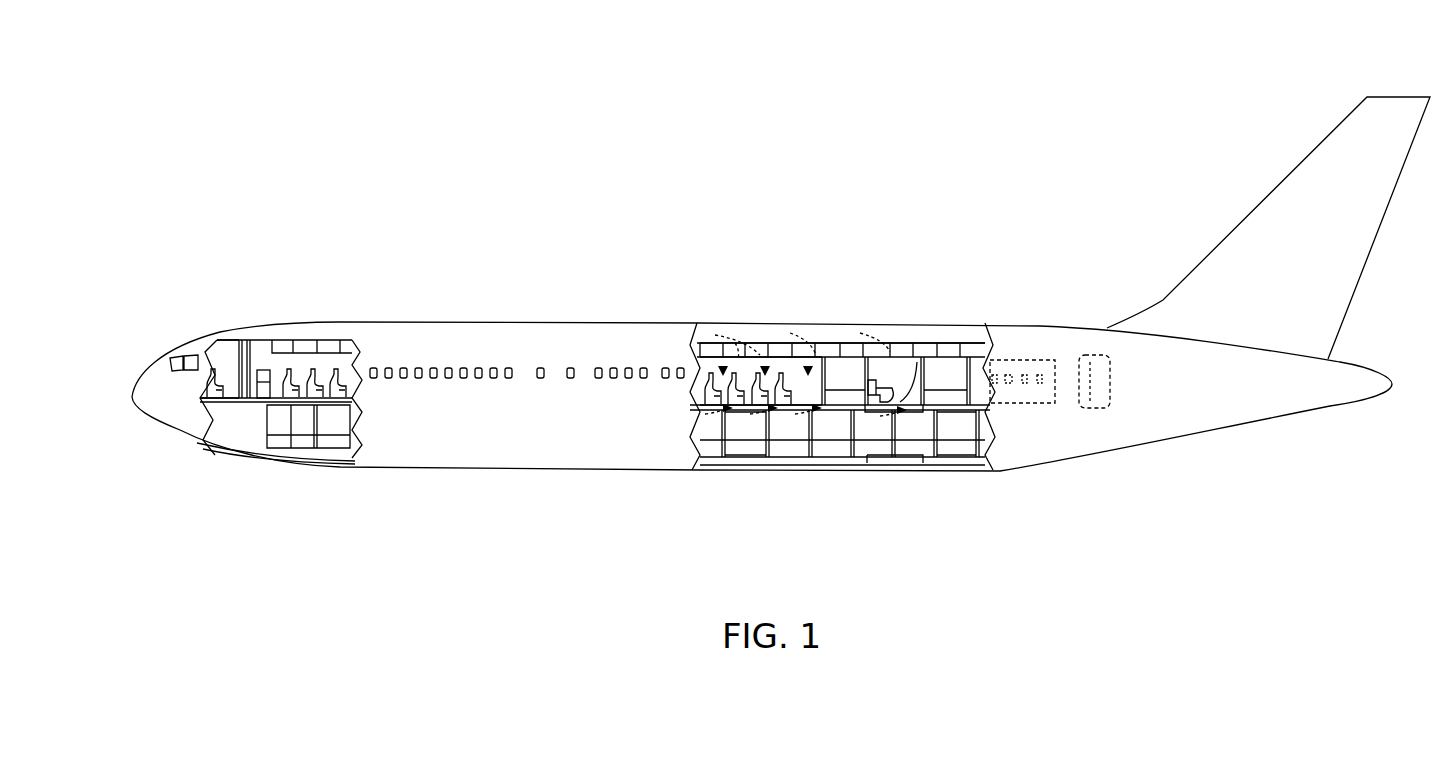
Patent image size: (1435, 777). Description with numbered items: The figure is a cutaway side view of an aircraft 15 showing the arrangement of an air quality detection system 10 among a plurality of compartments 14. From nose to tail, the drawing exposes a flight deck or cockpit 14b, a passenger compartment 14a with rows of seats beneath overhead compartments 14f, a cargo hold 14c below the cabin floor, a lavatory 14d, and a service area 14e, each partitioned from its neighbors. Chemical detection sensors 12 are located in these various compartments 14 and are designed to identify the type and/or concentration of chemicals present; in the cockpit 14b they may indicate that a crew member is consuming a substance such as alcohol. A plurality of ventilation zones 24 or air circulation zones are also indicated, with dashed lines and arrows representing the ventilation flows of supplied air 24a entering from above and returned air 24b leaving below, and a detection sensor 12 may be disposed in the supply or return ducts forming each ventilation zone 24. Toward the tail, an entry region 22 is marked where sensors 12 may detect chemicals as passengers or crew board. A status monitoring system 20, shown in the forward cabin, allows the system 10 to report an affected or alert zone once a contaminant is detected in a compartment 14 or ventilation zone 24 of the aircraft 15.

The air quality detection system 10 is at (218, 208).
The chemical detection sensor 12 is at (225, 338).
The compartments 14 is at (588, 389).
The passenger compartment 14a is at (740, 362).
The cockpit 14b is at (210, 343).
The cargo hold 14c is at (786, 442).
The lavatory 14d is at (902, 368).
The service area 14e is at (956, 402).
The overhead compartments 14f is at (829, 343).
The aircraft 15 is at (1130, 345).
The status monitoring system 20 is at (264, 355).
The entry region 22 is at (1094, 382).
The ventilation zones 24 is at (790, 380).
The supplied air 24a is at (800, 334).
The returned air 24b is at (746, 420).